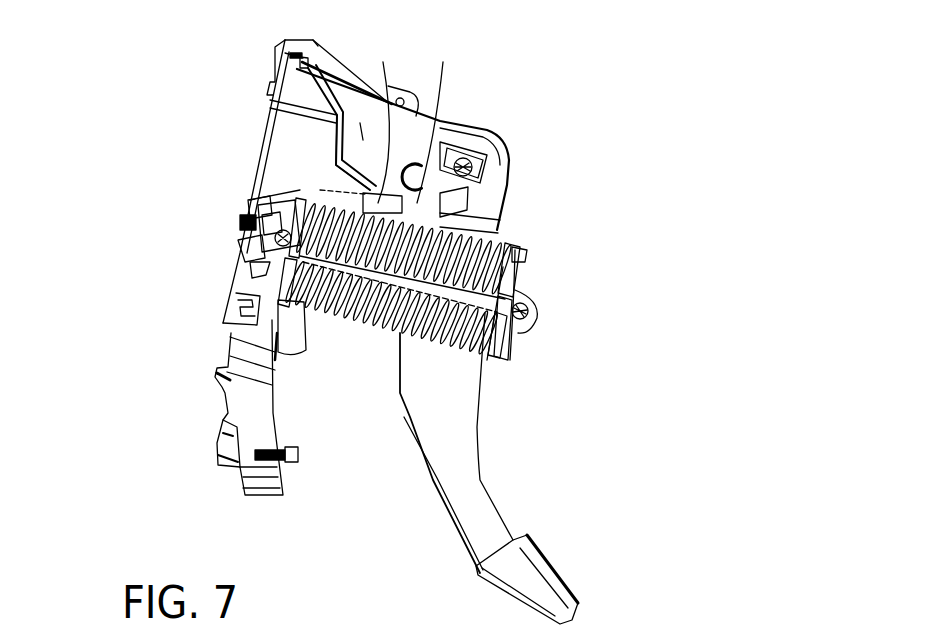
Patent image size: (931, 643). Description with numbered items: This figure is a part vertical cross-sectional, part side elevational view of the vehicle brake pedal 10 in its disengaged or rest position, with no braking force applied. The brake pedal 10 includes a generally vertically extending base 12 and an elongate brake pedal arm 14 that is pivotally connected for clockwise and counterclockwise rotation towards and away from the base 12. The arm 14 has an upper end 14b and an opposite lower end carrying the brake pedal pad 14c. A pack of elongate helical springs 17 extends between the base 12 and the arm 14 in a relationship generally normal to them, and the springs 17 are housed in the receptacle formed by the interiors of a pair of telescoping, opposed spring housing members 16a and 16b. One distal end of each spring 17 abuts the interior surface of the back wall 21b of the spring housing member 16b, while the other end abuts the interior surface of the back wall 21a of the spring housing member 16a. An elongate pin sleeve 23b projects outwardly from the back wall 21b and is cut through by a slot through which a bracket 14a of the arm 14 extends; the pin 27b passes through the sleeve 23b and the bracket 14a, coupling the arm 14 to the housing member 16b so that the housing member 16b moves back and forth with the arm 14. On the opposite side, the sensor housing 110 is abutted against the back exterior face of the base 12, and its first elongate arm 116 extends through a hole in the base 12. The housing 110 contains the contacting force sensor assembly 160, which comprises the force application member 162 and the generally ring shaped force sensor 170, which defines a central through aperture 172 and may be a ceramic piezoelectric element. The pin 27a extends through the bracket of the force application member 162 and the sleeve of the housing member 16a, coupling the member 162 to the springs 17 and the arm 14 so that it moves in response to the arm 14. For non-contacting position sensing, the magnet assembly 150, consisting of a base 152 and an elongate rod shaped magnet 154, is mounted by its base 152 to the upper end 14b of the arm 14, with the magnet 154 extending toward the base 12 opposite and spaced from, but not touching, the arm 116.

The vehicle brake pedal 10 is at (528, 88).
The base 12 is at (230, 408).
The brake pedal arm 14 is at (445, 440).
The bracket 14a is at (530, 320).
The upper end 14b is at (487, 203).
The brake pedal pad 14c is at (545, 555).
The spring housing member 16a is at (448, 268).
The spring housing member 16b is at (387, 333).
The helical springs 17 is at (345, 310).
The back wall 21a is at (290, 170).
The back wall 21b is at (522, 246).
The pin sleeve 23b is at (510, 322).
The pin 27a is at (245, 247).
The pin 27b is at (530, 300).
The sensor housing 110 is at (338, 178).
The first elongate arm 116 is at (325, 165).
The magnet assembly 150 is at (417, 207).
The base 152 is at (440, 197).
The rod shaped magnet 154 is at (378, 205).
The force sensor assembly 160 is at (243, 222).
The force application member 162 is at (272, 223).
The force sensor 170 is at (238, 250).
The central through aperture 172 is at (262, 207).